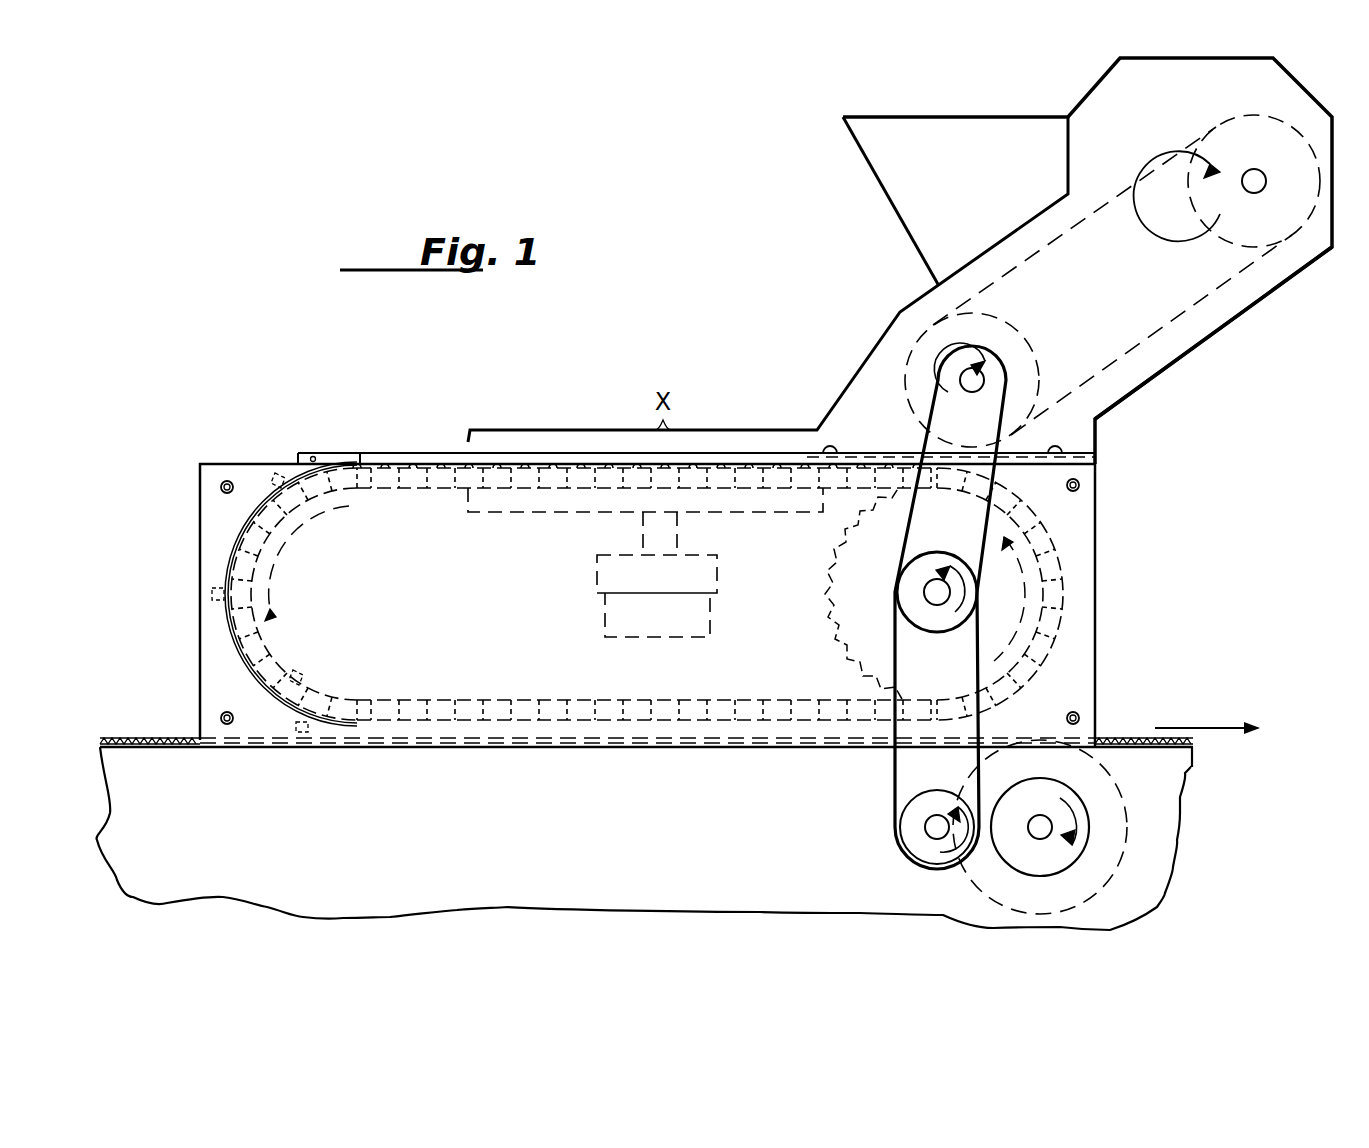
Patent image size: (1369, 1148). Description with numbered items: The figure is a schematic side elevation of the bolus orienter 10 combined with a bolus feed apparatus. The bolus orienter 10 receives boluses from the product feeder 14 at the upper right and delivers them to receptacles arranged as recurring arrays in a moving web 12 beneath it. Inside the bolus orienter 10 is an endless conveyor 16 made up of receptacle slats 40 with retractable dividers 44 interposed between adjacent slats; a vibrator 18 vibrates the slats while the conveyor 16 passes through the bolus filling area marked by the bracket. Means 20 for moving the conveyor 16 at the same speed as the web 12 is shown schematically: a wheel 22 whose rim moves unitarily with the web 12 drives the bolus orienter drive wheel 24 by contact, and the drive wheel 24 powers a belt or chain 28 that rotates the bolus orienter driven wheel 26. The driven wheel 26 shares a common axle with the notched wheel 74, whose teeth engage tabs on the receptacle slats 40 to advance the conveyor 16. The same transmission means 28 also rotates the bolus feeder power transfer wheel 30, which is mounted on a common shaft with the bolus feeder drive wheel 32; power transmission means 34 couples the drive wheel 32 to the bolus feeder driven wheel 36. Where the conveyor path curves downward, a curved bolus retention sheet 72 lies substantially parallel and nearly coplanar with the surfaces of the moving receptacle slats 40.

The bolus orienter 10 is at (407, 437).
The moving web 12 is at (172, 727).
The product feeder 14 is at (914, 272).
The endless conveyor 16 is at (1067, 603).
The vibrator 18 is at (552, 513).
The conveyor moving means 20 is at (990, 717).
The wheel 22 is at (1127, 830).
The bolus orienter drive wheel 24 is at (893, 848).
The bolus orienter driven wheel 26 is at (908, 580).
The power transmission means 28 is at (893, 653).
The bolus feeder power transfer wheel 30 is at (1000, 354).
The bolus feeder drive wheel 32 is at (1039, 372).
The power transmission means 34 is at (1204, 302).
The bolus feeder driven wheel 36 is at (1307, 222).
The receptacle slat 40 is at (587, 457).
The retractable divider 44 is at (545, 457).
The curved bolus retention sheet 72 is at (247, 517).
The notched wheel 74 is at (830, 607).